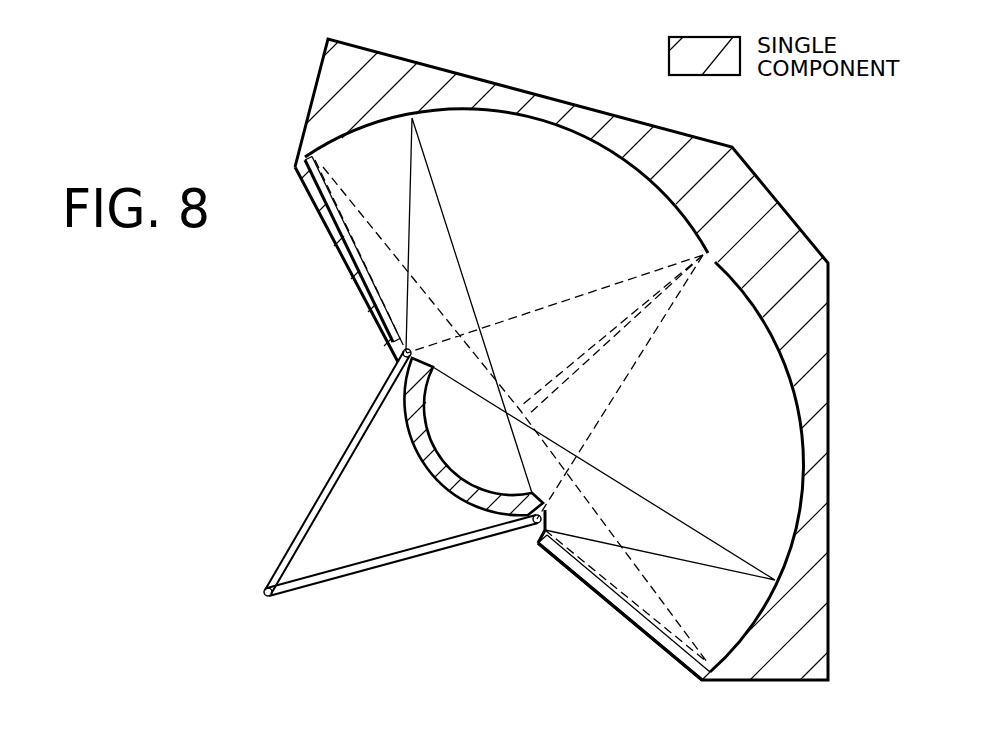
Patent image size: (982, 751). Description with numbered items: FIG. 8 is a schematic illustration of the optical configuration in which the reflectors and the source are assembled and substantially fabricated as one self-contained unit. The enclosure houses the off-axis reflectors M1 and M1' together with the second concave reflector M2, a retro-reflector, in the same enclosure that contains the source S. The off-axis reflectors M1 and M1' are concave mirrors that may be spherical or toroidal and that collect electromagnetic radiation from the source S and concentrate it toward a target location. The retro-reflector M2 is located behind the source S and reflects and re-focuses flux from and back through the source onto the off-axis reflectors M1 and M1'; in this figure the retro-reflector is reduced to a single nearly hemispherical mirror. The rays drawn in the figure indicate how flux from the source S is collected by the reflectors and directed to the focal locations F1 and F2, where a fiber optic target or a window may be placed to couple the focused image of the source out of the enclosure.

The first mirror segment M1' is at (506, 181).
The first mirror M1 is at (753, 467).
The second concave reflector (retro-reflector) M2 is at (464, 436).
The focal spot S is at (612, 342).
The first flap arm F1 is at (488, 595).
The second flap arm F2 is at (337, 472).